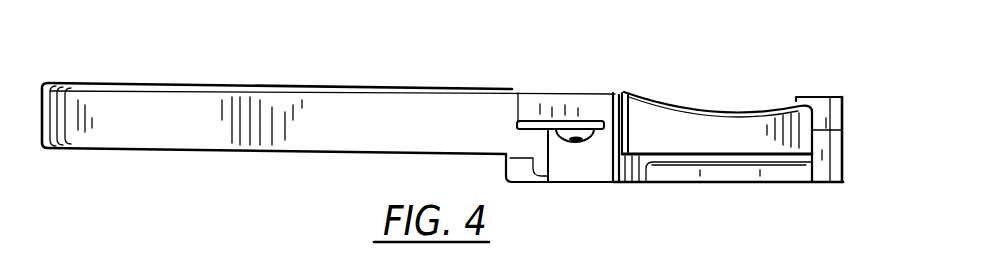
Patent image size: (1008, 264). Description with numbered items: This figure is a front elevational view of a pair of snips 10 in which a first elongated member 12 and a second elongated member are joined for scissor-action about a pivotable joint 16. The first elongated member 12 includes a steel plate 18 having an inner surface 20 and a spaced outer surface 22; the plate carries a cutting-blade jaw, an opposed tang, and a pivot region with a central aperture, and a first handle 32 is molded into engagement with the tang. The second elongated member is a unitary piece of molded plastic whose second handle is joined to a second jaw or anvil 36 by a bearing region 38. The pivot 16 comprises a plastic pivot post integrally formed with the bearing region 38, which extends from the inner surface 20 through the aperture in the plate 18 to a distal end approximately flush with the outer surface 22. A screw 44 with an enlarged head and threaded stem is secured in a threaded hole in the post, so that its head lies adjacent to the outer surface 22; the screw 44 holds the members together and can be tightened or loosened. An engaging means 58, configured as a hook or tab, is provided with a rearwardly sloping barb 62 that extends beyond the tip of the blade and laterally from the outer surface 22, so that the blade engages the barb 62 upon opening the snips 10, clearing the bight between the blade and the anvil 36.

The snips 10 is at (123, 62).
The first elongated member 12 is at (233, 60).
The first handle 32 is at (145, 138).
The outer surface 22 is at (540, 162).
The steel plate 18 is at (543, 128).
The inner surface 20 is at (577, 122).
The screw 44 is at (583, 142).
The pivotable joint 16 is at (569, 162).
The bearing region 38 is at (613, 92).
The second jaw or anvil 36 is at (725, 115).
The engaging means 58 is at (848, 94).
The barb 62 is at (843, 168).